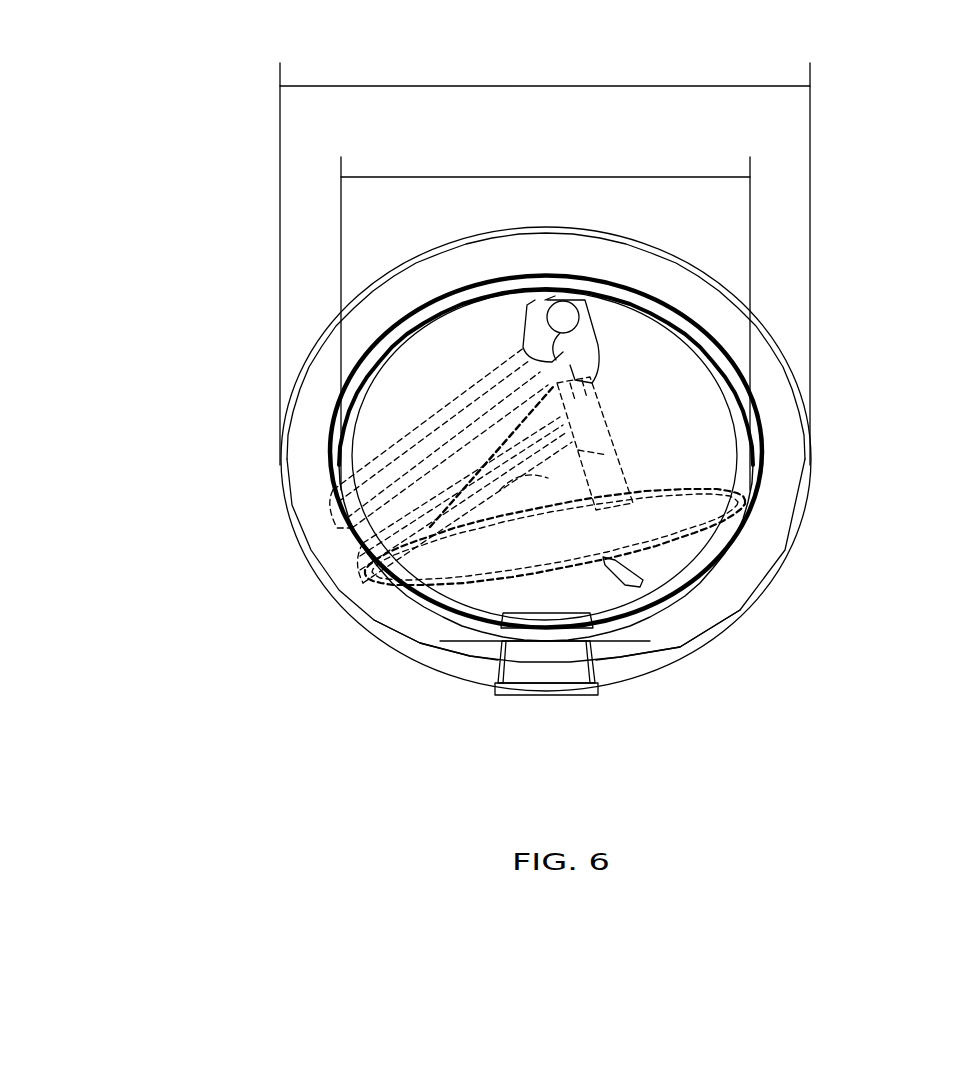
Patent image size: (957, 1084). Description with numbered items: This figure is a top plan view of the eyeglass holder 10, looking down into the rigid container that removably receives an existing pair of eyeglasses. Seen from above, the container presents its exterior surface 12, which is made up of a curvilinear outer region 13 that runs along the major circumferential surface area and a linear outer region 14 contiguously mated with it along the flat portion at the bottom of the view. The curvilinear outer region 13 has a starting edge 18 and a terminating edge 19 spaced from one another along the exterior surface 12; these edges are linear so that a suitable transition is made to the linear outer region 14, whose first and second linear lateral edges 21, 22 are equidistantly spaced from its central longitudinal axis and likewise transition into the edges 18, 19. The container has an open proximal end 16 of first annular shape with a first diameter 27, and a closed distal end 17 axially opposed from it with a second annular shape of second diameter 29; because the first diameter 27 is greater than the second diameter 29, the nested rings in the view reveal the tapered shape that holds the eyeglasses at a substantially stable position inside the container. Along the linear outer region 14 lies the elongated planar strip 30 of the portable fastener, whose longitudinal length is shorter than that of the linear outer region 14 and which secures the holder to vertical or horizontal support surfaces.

The eyeglass holder 10 is at (878, 343).
The exterior surface 12 is at (323, 548).
The curvilinear outer region 13 is at (307, 440).
The linear outer region 14 is at (533, 682).
The open proximal end 16 is at (805, 510).
The closed distal end 17 is at (735, 550).
The starting edge 18 is at (597, 673).
The terminating edge 19 is at (493, 680).
The first linear lateral edge 21 is at (596, 661).
The second linear lateral edge 22 is at (498, 661).
The first diameter 27 is at (580, 86).
The second diameter 29 is at (547, 177).
The elongated planar strip 30 is at (563, 695).